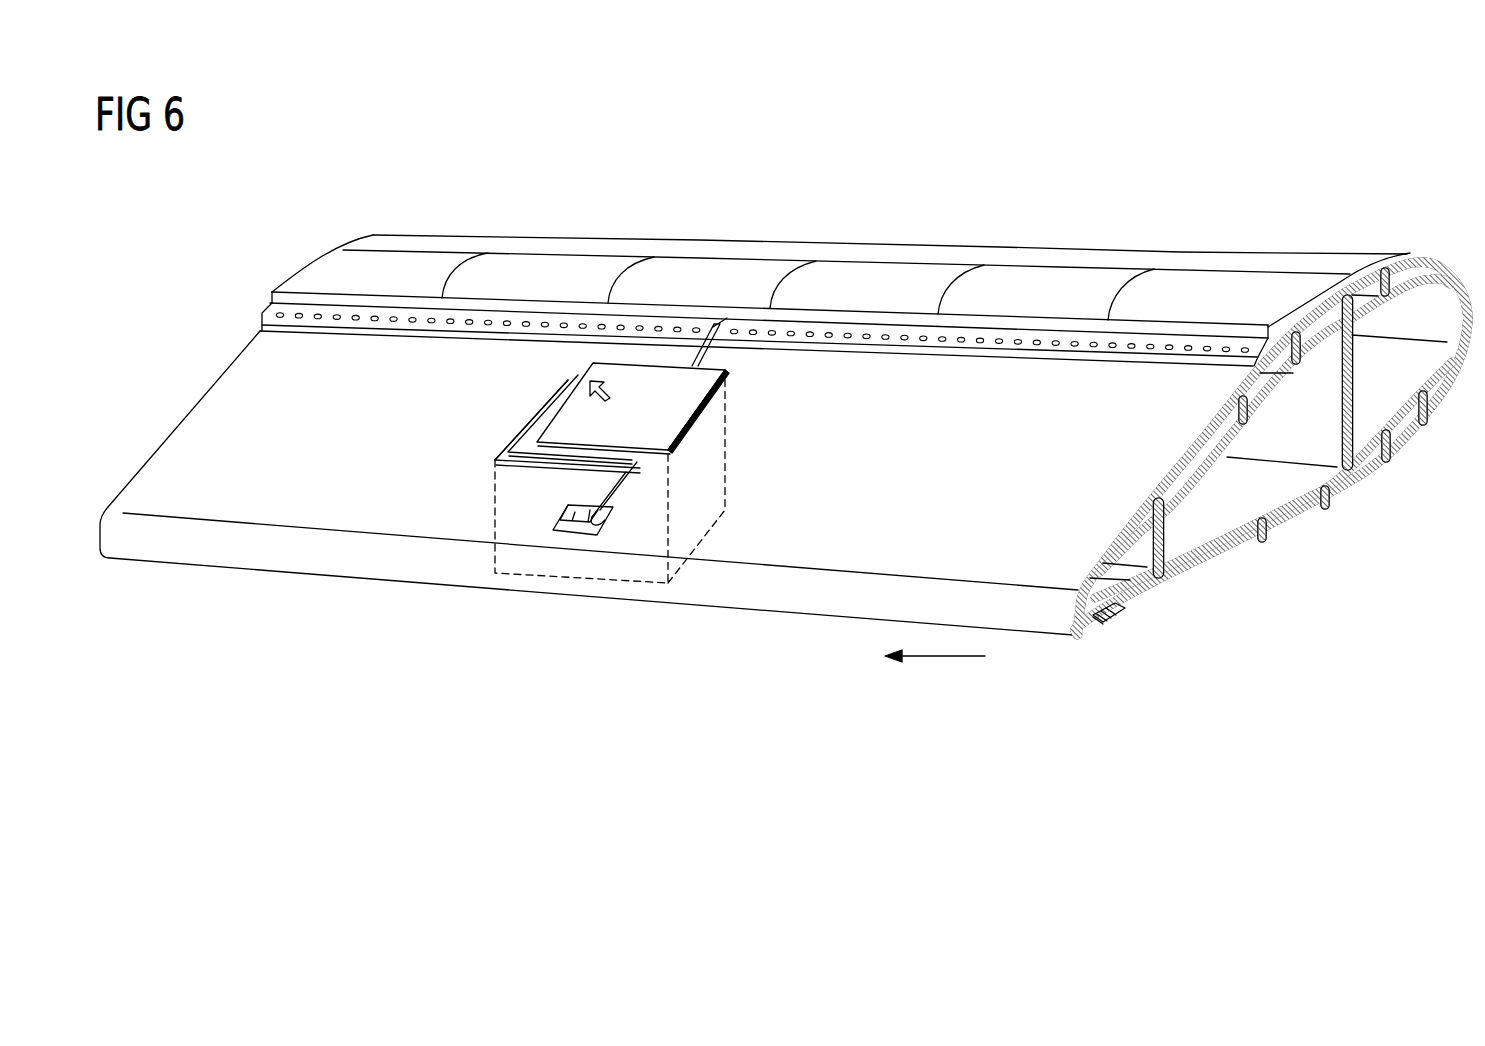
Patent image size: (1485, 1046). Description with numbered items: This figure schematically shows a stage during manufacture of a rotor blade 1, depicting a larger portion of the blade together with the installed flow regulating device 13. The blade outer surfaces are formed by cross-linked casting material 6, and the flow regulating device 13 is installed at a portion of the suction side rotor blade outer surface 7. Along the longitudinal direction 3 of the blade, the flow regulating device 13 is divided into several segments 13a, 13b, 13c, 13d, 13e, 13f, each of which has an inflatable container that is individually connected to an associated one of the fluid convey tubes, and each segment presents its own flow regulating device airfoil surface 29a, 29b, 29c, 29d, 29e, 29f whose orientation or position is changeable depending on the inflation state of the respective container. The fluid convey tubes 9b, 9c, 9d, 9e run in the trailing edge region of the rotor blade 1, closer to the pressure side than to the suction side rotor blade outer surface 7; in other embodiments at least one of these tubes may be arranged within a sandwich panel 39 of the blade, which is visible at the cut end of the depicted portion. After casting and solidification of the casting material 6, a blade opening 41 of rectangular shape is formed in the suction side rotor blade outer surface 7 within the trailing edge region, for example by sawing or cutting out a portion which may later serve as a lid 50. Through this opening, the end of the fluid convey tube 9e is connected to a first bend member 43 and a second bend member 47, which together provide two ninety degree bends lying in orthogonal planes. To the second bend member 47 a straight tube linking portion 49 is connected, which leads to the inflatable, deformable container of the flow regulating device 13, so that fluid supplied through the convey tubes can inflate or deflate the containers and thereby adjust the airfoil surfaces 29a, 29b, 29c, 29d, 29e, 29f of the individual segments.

The rotor blade 1 is at (150, 372).
The longitudinal direction 3 is at (948, 660).
The cross-linked casting material 6 is at (1170, 466).
The suction side rotor blade outer surface 7 is at (250, 356).
The fluid convey tube 9b is at (1102, 628).
The fluid convey tube 9c is at (1117, 618).
The fluid convey tube 9d is at (1122, 613).
The fluid convey tube 9e is at (1127, 607).
The flow regulating device 13 is at (280, 242).
The segment of the flow regulating device 13a is at (375, 268).
The segment of the flow regulating device 13b is at (537, 265).
The segment of the flow regulating device 13c is at (680, 277).
The segment of the flow regulating device 13d is at (830, 277).
The segment of the flow regulating device 13e is at (1013, 277).
The segment of the flow regulating device 13f is at (1173, 277).
The flow regulating device airfoil surface 29a is at (413, 273).
The flow regulating device airfoil surface 29b is at (570, 280).
The flow regulating device airfoil surface 29c is at (727, 277).
The flow regulating device airfoil surface 29d is at (888, 275).
The flow regulating device airfoil surface 29e is at (1065, 275).
The flow regulating device airfoil surface 29f is at (1252, 292).
The sandwich panel 39 is at (1271, 488).
The blade opening 41 is at (557, 522).
The first bend member 43 is at (605, 510).
The second bend member 47 is at (650, 501).
The straight linking portion 49 is at (713, 357).
The lid 50 is at (697, 398).